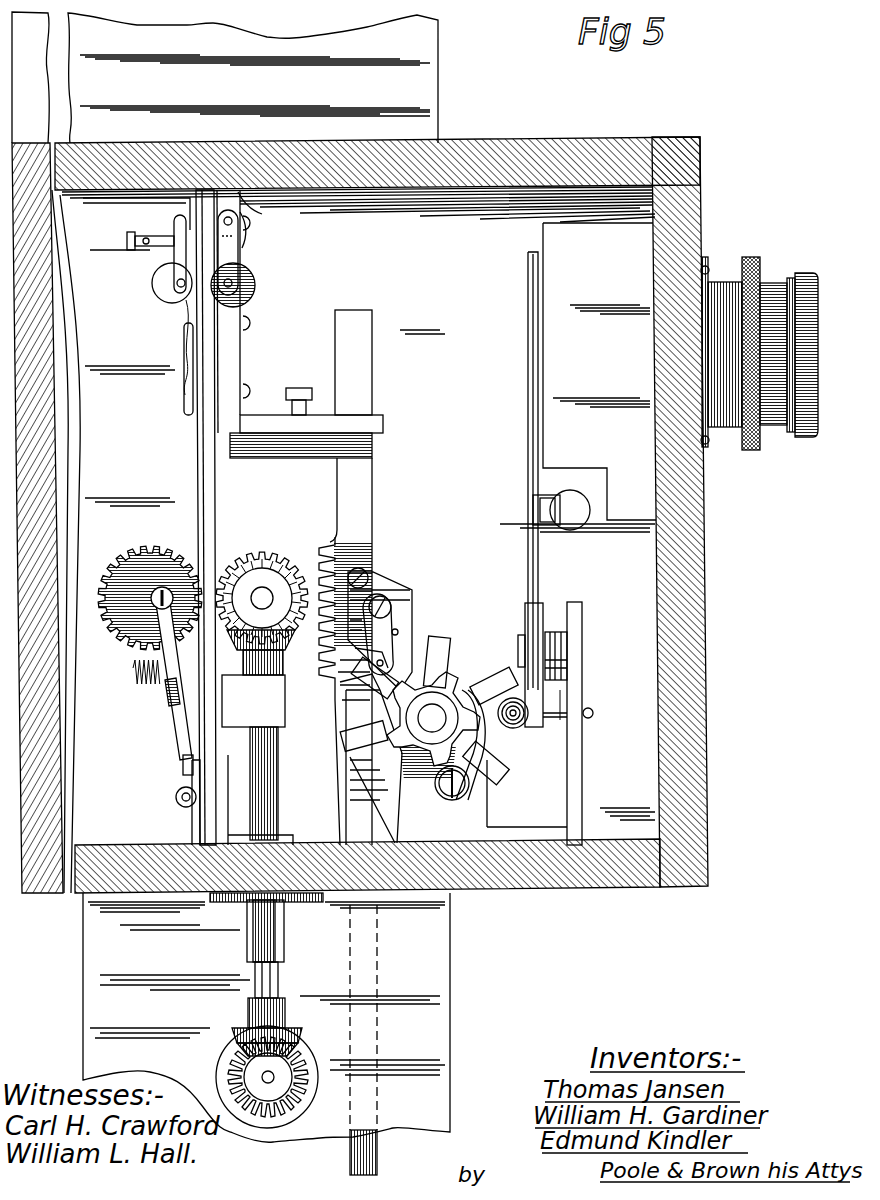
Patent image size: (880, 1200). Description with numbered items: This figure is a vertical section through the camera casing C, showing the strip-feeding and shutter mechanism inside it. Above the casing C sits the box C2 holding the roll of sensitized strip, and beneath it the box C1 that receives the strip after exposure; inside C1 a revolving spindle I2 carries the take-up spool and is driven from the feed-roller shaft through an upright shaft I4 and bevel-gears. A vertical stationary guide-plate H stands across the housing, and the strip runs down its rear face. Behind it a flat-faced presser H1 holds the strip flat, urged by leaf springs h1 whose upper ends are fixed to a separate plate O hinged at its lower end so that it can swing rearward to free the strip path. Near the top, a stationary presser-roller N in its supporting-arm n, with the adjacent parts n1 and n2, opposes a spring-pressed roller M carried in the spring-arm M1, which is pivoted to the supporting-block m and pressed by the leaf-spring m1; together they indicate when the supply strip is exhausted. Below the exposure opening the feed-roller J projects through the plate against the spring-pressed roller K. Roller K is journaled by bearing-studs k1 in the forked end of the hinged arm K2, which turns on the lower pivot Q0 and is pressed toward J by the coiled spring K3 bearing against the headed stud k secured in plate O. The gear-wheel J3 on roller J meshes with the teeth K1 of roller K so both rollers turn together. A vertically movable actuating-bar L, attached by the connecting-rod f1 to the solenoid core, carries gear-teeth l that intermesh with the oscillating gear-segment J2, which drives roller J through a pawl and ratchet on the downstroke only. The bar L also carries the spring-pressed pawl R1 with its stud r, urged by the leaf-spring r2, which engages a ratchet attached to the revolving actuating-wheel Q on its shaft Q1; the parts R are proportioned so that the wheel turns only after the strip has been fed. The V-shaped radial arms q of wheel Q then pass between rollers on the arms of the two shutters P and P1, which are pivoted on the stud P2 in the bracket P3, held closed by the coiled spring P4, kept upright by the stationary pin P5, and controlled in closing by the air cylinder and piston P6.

The casing C is at (802, 432).
The box C1 is at (266, 1017).
The box C2 is at (253, 78).
The guide-plate H is at (212, 485).
The presser H1 is at (189, 380).
The springs h1 is at (184, 322).
The plate O is at (197, 464).
The presser-roller N is at (165, 283).
The supporting-arm n is at (173, 251).
The bracket n1 is at (188, 206).
The pin n2 is at (127, 242).
The presser-roller M is at (257, 280).
The spring-arm M1 is at (240, 258).
The supporting-block m is at (262, 214).
The leaf-spring m1 is at (247, 239).
The actuating-bar L is at (306, 517).
The gear-teeth l is at (321, 548).
The feed-roller J is at (263, 597).
The gear-segment J2 is at (258, 545).
The gear-wheel J3 is at (244, 560).
The gear-teeth K1 is at (136, 540).
The feed-roller K is at (156, 594).
The bearing-studs k1 is at (152, 603).
The stud k is at (188, 668).
The hinged arm K2 is at (172, 717).
The spring K3 is at (145, 684).
The pivot Q0 is at (176, 798).
The shutter-actuating parts R is at (380, 730).
The pawl R1 is at (410, 610).
The stud r is at (352, 682).
The leaf-spring r2 is at (332, 662).
The actuating-wheel Q is at (452, 690).
The radial arms q is at (450, 633).
The shaft Q1 is at (432, 720).
The shutter P is at (527, 541).
The shutter P1 is at (540, 560).
The pivot-stud P2 is at (560, 640).
The bracket P3 is at (582, 746).
The coiled spring P4 is at (560, 656).
The stationary pin P5 is at (594, 714).
The air cylinder and piston P6 is at (583, 520).
The upright shaft I4 is at (279, 972).
The spindle I2 is at (270, 1075).
The connecting-rod f1 is at (378, 1152).